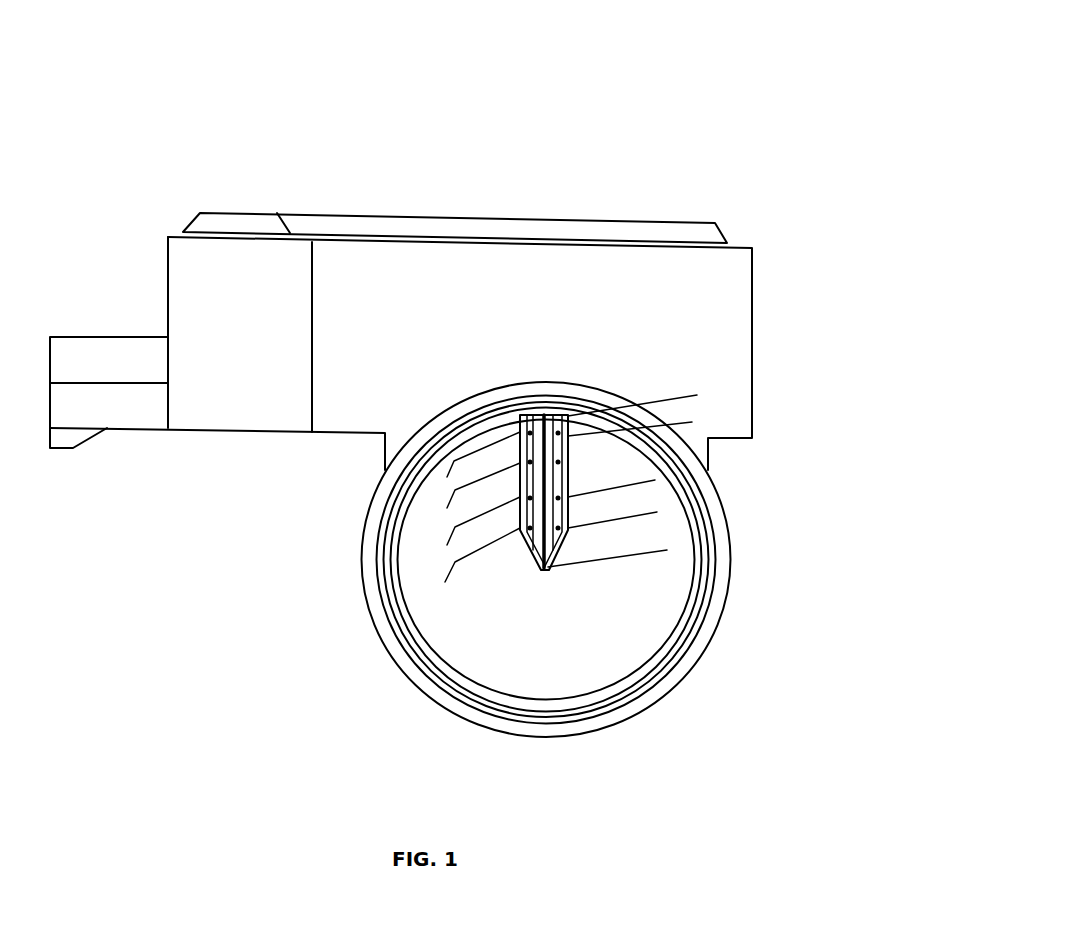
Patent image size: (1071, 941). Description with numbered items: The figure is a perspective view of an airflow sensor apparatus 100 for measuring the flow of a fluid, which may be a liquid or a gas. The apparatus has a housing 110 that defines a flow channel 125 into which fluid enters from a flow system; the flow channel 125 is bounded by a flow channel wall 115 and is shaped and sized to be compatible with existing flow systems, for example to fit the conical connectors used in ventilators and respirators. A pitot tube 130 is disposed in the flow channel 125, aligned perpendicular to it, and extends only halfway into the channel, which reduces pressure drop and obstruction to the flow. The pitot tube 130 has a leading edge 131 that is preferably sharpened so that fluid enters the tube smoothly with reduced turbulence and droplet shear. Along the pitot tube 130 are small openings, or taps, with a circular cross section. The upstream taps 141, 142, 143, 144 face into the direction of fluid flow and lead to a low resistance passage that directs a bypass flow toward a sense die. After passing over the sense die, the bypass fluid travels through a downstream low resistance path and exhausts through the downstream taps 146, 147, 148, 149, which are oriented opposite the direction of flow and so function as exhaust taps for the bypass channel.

The airflow sensor apparatus 100 is at (631, 77).
The housing 110 is at (733, 258).
The flow channel wall 115 is at (710, 622).
The flow channel 125 is at (633, 652).
The pitot tube 130 is at (538, 562).
The leading edge 131 is at (667, 550).
The upstream tap 141 is at (447, 477).
The upstream tap 142 is at (447, 508).
The upstream tap 143 is at (447, 545).
The upstream tap 144 is at (445, 582).
The downstream tap 146 is at (697, 395).
The downstream tap 147 is at (692, 422).
The downstream tap 148 is at (655, 480).
The downstream tap 149 is at (657, 512).